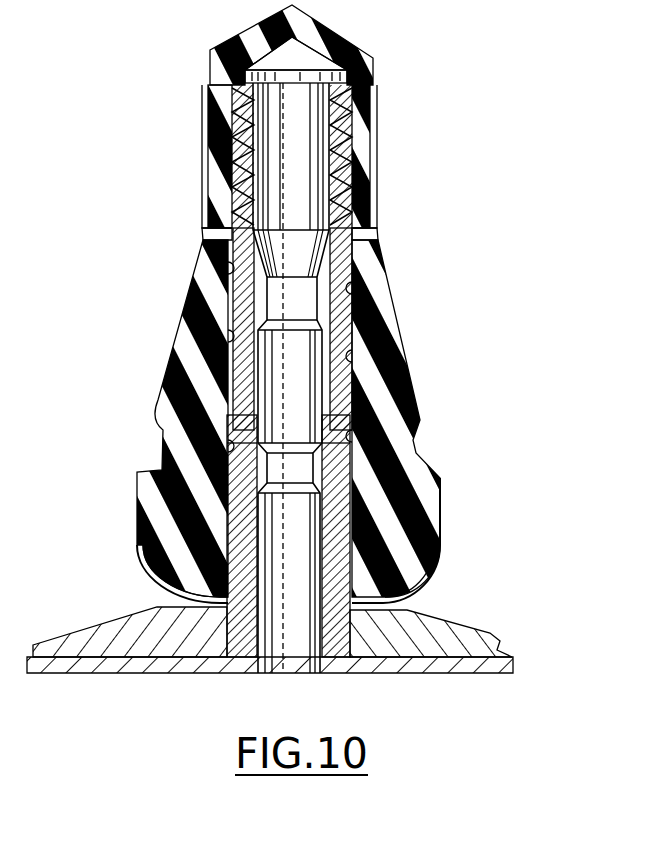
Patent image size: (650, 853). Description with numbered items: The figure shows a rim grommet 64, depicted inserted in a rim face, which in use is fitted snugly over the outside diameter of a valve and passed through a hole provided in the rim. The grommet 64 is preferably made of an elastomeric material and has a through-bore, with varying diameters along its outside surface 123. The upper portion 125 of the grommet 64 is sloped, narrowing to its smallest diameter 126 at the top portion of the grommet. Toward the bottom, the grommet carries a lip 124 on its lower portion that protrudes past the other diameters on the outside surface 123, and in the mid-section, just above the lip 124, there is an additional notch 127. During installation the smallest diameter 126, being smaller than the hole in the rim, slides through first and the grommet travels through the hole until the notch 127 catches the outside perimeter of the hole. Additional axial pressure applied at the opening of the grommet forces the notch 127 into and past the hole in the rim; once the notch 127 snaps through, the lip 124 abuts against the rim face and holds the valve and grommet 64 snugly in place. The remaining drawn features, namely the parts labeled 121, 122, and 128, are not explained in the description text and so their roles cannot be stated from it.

The rim grommet 64 is at (154, 554).
The rounded lower portion 121 is at (445, 532).
The base plate 122 is at (228, 608).
The outside surface 123 is at (462, 357).
The lip 124 is at (433, 480).
The upper portion 125 is at (392, 290).
The smallest diameter 126 is at (232, 237).
The notch 127 is at (428, 420).
The skin layer 128 is at (420, 584).